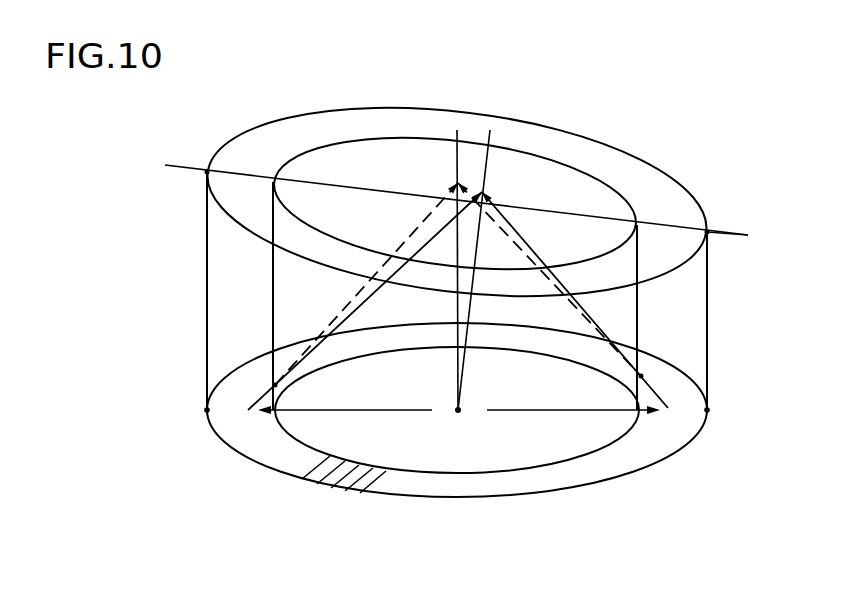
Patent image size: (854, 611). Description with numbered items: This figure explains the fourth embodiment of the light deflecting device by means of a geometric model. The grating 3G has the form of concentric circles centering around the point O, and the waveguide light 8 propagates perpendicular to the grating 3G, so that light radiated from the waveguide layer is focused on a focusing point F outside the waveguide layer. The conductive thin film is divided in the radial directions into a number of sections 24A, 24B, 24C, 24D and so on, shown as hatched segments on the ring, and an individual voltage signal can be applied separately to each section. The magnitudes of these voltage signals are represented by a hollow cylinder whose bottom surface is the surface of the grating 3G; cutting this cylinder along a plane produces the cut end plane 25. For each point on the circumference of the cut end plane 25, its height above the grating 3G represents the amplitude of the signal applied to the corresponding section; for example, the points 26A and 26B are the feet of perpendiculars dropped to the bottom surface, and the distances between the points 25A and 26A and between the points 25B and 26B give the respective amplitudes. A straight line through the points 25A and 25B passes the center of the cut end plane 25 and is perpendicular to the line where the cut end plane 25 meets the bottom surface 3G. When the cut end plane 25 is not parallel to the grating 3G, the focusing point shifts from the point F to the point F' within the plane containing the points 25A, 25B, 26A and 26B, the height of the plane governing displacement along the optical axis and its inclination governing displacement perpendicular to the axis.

The cut end plane 25 is at (637, 174).
The point on cut end plane 25A is at (433, 194).
The point on cut end plane 25B is at (757, 223).
The grating 3G is at (670, 377).
The foot of perpendicular 26A is at (205, 412).
The foot of perpendicular 26B is at (715, 410).
The section 24A is at (300, 483).
The section 24B is at (320, 488).
The section 24C is at (337, 491).
The section 24D is at (362, 494).
The waveguide light 8 is at (357, 410).
The center point O is at (465, 407).
The focusing point F is at (458, 270).
The shifted focusing point F' is at (458, 270).